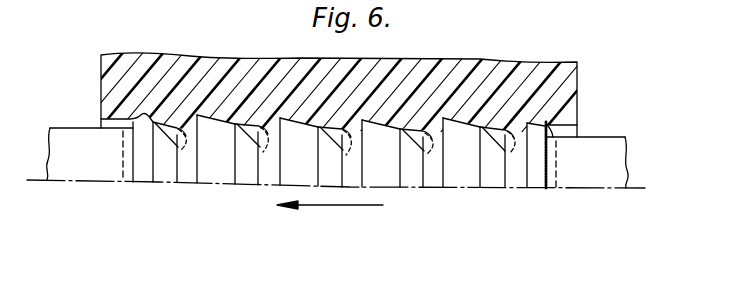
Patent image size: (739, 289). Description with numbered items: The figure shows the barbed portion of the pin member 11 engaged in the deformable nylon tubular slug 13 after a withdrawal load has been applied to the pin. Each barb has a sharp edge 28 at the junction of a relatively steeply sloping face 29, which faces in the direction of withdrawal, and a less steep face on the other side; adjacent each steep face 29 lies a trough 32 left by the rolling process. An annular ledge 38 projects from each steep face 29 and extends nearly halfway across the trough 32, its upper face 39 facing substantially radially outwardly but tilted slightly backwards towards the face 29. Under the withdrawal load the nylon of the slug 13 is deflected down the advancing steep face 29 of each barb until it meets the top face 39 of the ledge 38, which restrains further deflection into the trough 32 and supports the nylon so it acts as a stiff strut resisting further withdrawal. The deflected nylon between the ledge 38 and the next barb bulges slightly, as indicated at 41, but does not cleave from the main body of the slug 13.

The pin member 11 is at (585, 163).
The tubular slug 13 is at (563, 97).
The sharp edge 28 is at (333, 58).
The steeply sloping face 29 is at (288, 119).
The trough 32 is at (253, 152).
The annular ledge 38 is at (265, 123).
The upper face 39 is at (262, 127).
The bulge 41 is at (250, 126).